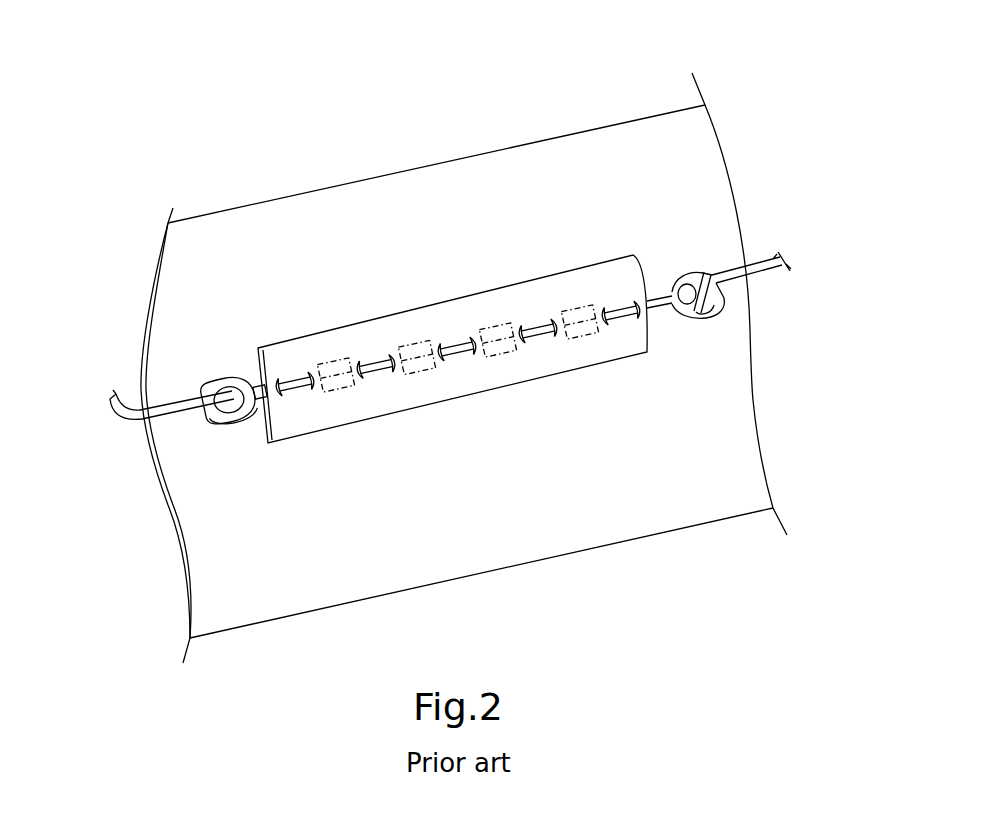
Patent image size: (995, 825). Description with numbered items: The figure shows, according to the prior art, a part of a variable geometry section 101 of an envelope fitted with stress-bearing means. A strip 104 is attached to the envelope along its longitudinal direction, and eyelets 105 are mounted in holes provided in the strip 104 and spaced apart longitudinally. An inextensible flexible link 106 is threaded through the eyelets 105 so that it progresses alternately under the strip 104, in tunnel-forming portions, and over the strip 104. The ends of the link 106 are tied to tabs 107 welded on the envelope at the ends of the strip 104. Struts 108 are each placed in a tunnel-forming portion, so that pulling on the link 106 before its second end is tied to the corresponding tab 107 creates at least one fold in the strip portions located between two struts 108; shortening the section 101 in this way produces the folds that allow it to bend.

The variable geometry section 101 is at (457, 193).
The strip 104 is at (623, 275).
The eyelet 105 is at (295, 379).
The inextensible flexible link 106 is at (112, 408).
The tab 107 is at (222, 380).
The strut 108 is at (338, 398).